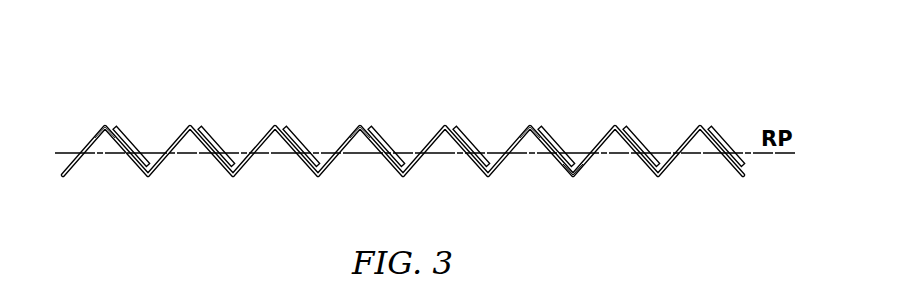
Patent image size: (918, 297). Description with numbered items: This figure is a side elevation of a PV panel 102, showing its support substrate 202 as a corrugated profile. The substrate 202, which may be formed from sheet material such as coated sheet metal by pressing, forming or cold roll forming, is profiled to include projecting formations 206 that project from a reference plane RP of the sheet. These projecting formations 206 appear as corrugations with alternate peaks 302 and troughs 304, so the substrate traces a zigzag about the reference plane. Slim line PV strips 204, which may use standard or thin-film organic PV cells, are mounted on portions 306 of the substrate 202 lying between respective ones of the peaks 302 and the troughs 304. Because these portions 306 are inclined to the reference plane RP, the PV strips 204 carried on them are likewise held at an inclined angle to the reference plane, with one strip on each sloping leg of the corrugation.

The PV panel 102 is at (388, 133).
The support substrate 202 is at (507, 176).
The PV strips 204 is at (126, 131).
The projecting formations 206 is at (93, 122).
The peaks 302 is at (528, 126).
The troughs 304 is at (574, 177).
The portions 306 is at (130, 170).